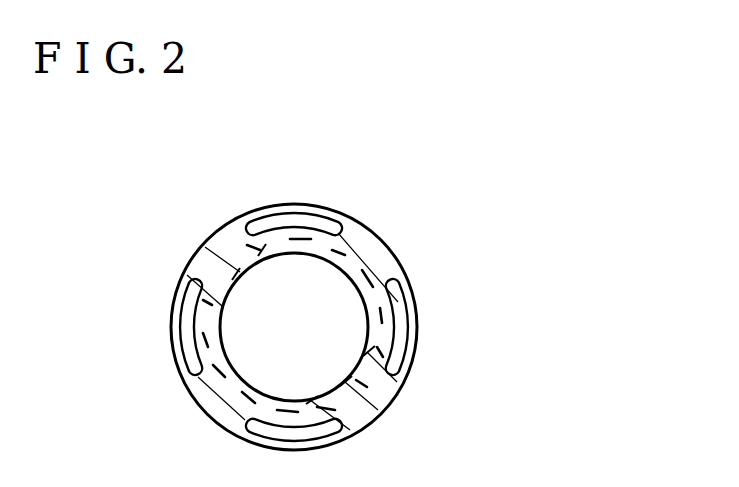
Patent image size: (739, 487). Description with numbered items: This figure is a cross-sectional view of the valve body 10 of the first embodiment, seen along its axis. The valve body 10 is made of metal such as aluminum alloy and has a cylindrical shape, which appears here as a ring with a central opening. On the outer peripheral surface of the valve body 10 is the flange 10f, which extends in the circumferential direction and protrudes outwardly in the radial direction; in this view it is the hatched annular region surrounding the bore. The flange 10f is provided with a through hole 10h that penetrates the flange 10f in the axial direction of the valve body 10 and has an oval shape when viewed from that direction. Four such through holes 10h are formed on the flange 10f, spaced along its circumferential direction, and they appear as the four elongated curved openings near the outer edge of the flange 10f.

The valve body 10 is at (404, 210).
The flange 10f is at (265, 253).
The through hole 10h is at (315, 220).